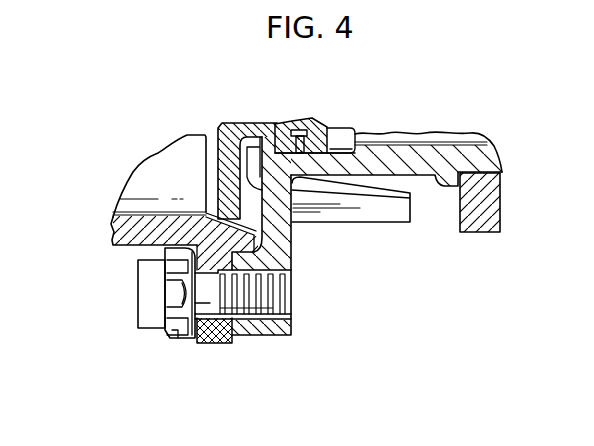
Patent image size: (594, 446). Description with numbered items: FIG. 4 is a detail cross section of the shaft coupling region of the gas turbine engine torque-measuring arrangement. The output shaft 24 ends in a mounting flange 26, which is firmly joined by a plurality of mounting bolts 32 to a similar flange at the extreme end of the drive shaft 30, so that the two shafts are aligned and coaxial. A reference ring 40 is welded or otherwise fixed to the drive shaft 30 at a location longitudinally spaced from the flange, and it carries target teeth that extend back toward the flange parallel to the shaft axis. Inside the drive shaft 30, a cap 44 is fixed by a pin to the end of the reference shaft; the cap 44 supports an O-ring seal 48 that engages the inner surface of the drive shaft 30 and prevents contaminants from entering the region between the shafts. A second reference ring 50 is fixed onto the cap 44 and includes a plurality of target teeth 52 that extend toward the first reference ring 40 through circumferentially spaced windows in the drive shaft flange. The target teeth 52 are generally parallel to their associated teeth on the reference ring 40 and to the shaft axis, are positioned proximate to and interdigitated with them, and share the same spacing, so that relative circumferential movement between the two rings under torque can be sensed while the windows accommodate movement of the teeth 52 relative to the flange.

The output shaft 24 is at (150, 225).
The mounting flange 26 is at (217, 330).
The drive shaft 30 is at (447, 160).
The mounting bolts 32 is at (137, 313).
The reference ring 40 is at (482, 223).
The cap 44 is at (307, 123).
The O-ring seal 48 is at (295, 136).
The second reference ring 50 is at (238, 132).
The target teeth 52 is at (393, 208).